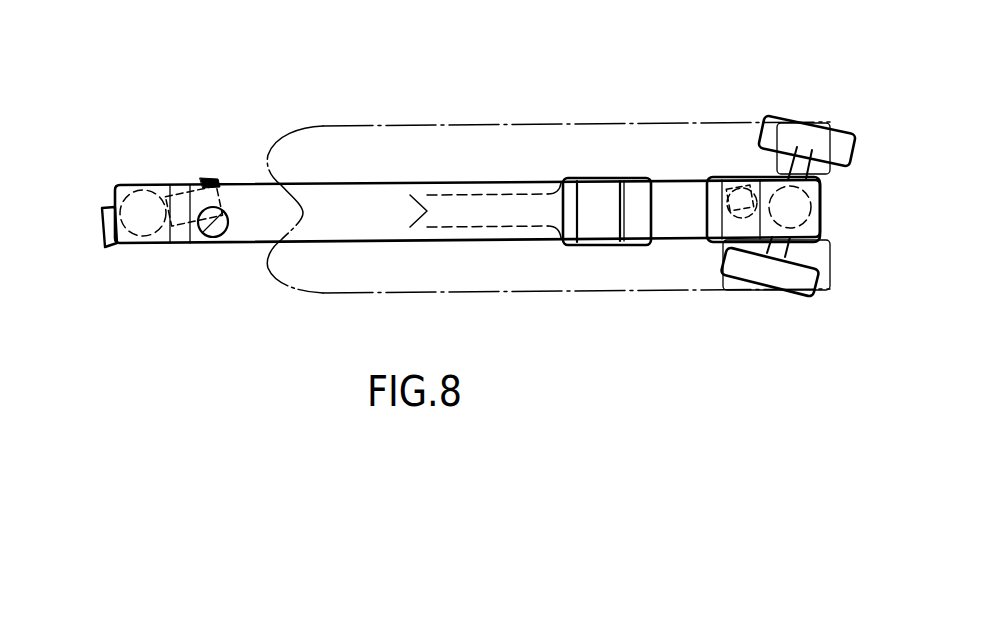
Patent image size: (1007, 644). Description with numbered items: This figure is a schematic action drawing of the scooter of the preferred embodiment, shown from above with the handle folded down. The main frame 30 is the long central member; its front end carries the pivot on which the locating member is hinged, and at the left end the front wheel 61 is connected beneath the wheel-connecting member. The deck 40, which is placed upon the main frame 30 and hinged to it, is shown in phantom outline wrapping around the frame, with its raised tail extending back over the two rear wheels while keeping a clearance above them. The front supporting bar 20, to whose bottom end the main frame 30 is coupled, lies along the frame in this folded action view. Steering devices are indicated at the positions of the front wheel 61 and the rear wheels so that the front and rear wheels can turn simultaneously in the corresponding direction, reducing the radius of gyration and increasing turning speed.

The front supporting bar 20 is at (218, 238).
The main frame 30 is at (248, 192).
The deck 40 is at (423, 132).
The front wheel 61 is at (104, 221).